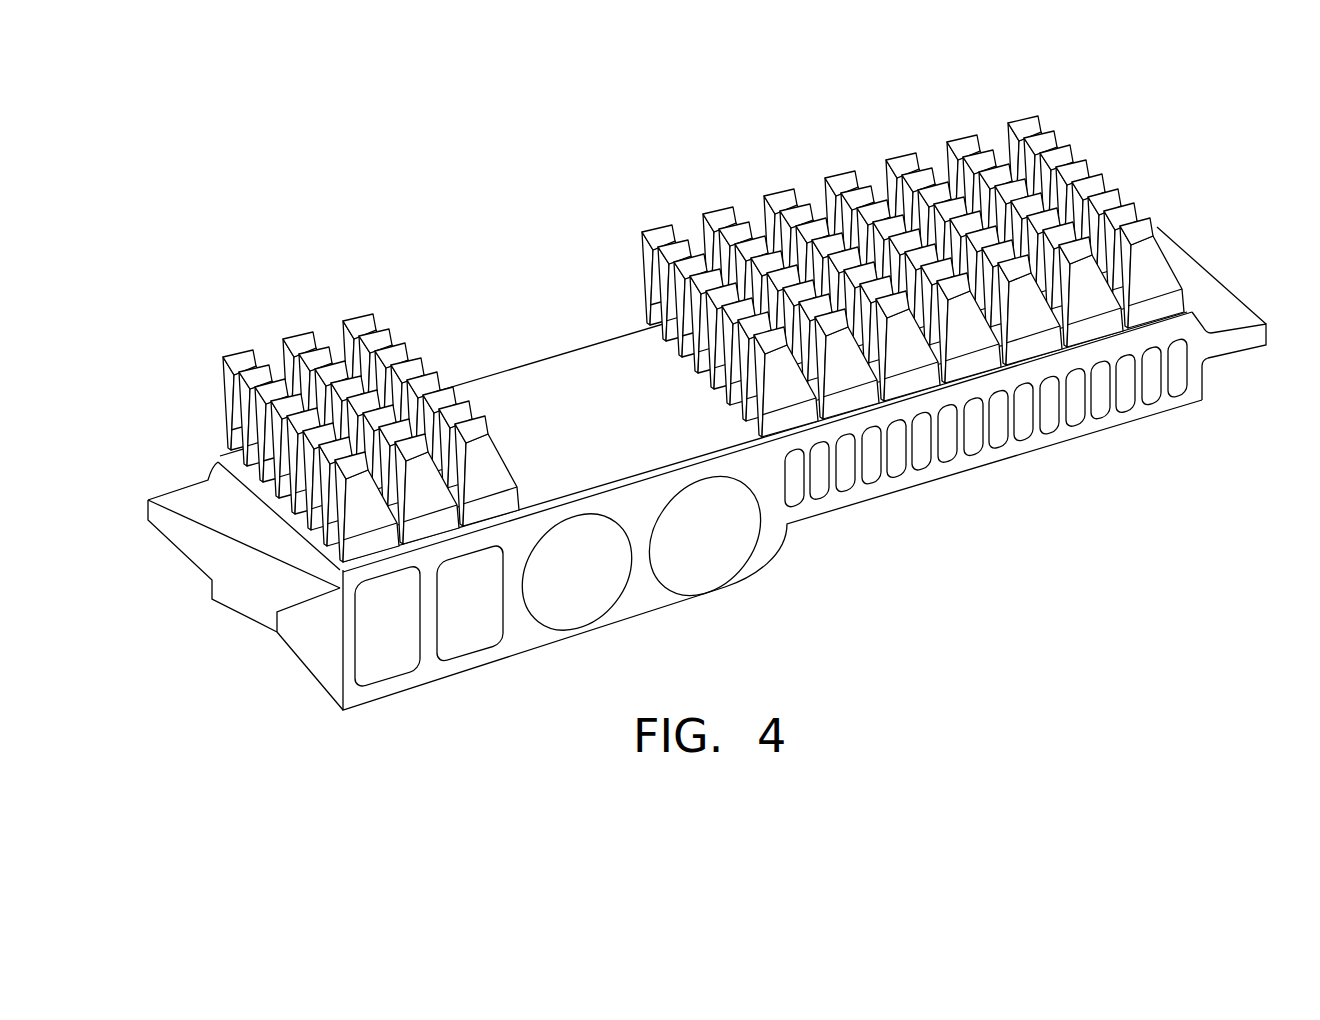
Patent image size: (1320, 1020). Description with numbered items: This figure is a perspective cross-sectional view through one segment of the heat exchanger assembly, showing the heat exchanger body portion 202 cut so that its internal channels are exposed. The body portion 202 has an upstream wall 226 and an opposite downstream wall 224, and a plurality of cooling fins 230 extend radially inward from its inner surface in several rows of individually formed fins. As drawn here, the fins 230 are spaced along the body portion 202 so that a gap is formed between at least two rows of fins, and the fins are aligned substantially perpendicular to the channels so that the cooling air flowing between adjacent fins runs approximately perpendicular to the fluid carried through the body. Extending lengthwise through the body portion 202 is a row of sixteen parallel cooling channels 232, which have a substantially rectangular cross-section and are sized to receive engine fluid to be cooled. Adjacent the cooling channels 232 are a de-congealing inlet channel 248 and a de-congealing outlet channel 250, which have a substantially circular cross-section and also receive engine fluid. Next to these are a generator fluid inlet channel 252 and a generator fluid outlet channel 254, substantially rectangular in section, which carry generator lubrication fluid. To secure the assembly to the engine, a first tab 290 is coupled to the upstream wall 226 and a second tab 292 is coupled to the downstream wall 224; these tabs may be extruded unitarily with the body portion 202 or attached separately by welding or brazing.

The heat exchanger body portion 202 is at (655, 600).
The downstream wall 224 is at (1206, 382).
The upstream wall 226 is at (317, 650).
The cooling fins 230 is at (1048, 132).
The cooling channels 232 is at (998, 438).
The de-congealing inlet channel 248 is at (722, 543).
The de-congealing outlet channel 250 is at (567, 596).
The generator fluid inlet channel 252 is at (383, 655).
The generator fluid outlet channel 254 is at (468, 626).
The first tab 290 is at (187, 502).
The second tab 292 is at (1198, 292).